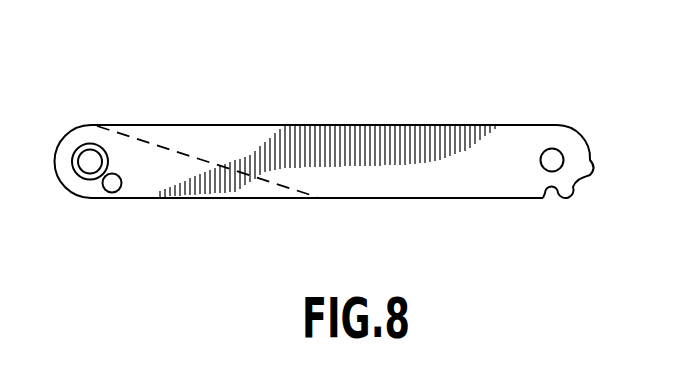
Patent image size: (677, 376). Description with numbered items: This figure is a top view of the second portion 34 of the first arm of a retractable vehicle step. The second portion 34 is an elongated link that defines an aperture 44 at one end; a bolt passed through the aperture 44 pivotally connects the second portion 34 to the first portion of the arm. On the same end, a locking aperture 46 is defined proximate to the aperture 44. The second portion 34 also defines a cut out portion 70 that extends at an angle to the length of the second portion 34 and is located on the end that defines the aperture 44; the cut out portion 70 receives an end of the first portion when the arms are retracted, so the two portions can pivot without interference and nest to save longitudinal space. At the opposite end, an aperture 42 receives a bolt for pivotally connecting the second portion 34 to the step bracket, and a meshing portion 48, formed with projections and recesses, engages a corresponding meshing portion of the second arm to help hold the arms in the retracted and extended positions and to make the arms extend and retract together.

The second portion 34 is at (421, 130).
The aperture 42 is at (552, 160).
The aperture 44 is at (89, 158).
The locking aperture 46 is at (108, 184).
The meshing portion 48 is at (591, 203).
The cut out portion 70 is at (216, 145).